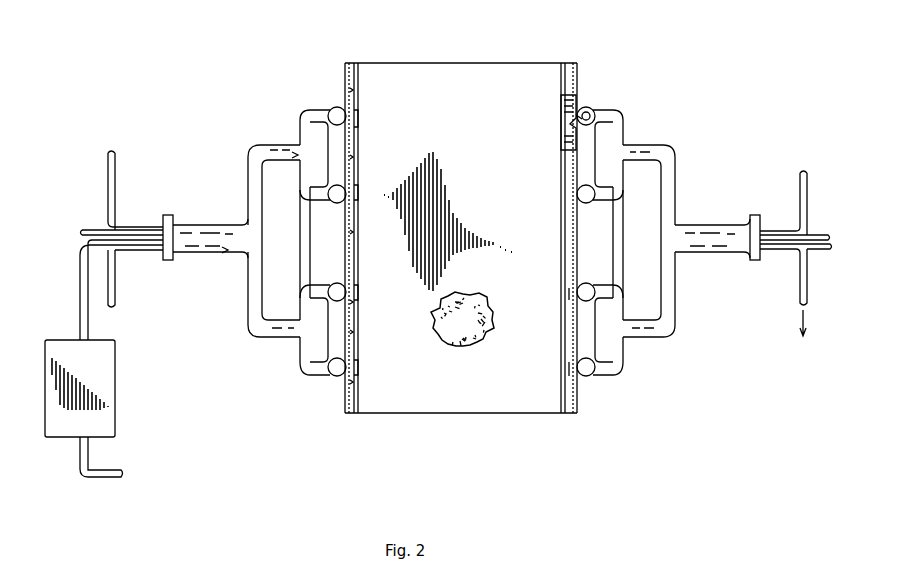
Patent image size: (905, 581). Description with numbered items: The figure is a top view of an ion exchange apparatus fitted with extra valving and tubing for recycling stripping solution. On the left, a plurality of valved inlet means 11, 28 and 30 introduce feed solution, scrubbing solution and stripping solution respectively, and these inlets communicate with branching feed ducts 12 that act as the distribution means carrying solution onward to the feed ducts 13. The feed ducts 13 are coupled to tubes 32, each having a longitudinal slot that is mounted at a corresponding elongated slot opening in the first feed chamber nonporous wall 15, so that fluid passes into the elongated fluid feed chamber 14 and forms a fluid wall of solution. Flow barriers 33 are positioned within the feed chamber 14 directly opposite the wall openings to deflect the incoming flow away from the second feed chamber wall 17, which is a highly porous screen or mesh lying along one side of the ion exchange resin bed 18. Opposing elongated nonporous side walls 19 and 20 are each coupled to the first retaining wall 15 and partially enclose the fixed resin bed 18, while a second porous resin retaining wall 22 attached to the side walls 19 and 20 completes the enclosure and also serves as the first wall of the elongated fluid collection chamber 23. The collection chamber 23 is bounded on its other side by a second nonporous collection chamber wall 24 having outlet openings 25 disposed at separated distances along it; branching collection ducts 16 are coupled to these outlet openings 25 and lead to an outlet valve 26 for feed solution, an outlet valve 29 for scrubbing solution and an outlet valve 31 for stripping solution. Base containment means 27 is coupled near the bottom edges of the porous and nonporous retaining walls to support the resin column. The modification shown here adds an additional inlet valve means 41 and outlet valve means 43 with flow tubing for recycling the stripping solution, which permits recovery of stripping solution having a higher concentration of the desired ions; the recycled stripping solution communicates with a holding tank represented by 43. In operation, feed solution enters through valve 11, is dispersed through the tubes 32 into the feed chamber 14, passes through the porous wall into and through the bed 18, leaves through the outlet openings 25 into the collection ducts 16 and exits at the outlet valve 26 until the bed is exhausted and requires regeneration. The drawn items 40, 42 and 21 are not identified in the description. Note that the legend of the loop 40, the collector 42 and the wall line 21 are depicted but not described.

The valved inlet means for feed solution 11 is at (88, 228).
The branching feed ducts 12 is at (219, 222).
The feed ducts 13 is at (258, 150).
The fluid feed chamber 14 is at (345, 405).
The first feed chamber nonporous wall 15 is at (343, 378).
The branching collection ducts 16 is at (726, 244).
The second feed chamber wall 17 is at (362, 400).
The ion exchange resin bed 18 is at (472, 326).
The nonporous side wall 19 is at (467, 63).
The nonporous side wall 20 is at (489, 414).
The right chamber wall 21 is at (571, 414).
The second porous resin retaining wall 22 is at (560, 376).
The fluid collection chamber 23 is at (565, 140).
The second nonporous collection chamber wall 24 is at (578, 257).
The outlet openings 25 is at (586, 110).
The outlet valve for feed solution 26 is at (812, 234).
The base containment means 27 is at (557, 63).
The valved inlet means for scrubbing solution 28 is at (113, 184).
The outlet valve for scrubbing solution 29 is at (800, 197).
The valved inlet means for stripping solution 30 is at (117, 258).
The outlet valve for stripping solution 31 is at (808, 280).
The tubes 32 is at (333, 108).
The flow barriers 33 is at (352, 192).
The upper distribution loop 40 is at (325, 104).
The additional inlet valve means 41 is at (107, 242).
The collector 42 is at (116, 399).
The outlet valve means 43 is at (812, 249).